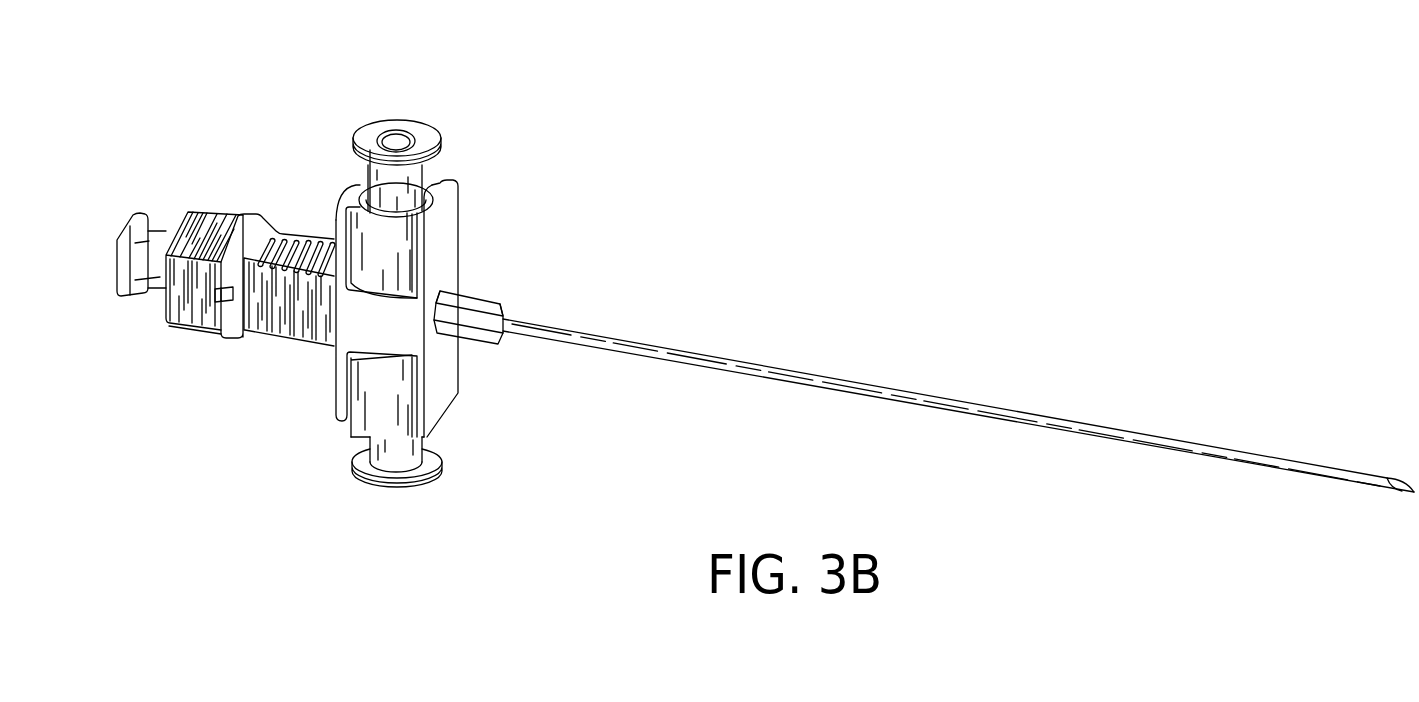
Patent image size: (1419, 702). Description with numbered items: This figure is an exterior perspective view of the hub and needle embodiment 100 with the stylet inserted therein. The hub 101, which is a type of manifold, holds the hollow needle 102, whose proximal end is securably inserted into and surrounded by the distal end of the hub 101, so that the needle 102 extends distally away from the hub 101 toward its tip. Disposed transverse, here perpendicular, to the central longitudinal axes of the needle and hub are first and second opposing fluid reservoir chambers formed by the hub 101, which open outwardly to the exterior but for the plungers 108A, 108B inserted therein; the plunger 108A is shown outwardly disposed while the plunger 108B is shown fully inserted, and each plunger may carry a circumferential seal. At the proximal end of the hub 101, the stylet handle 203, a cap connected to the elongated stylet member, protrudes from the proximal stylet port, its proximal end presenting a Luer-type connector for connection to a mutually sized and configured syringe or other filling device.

The hub and needle embodiment 100 is at (187, 32).
The hub 101 is at (448, 235).
The hollow needle 102 is at (866, 383).
The plunger 108A is at (422, 128).
The plunger 108B is at (368, 482).
The stylet handle 203 is at (219, 201).